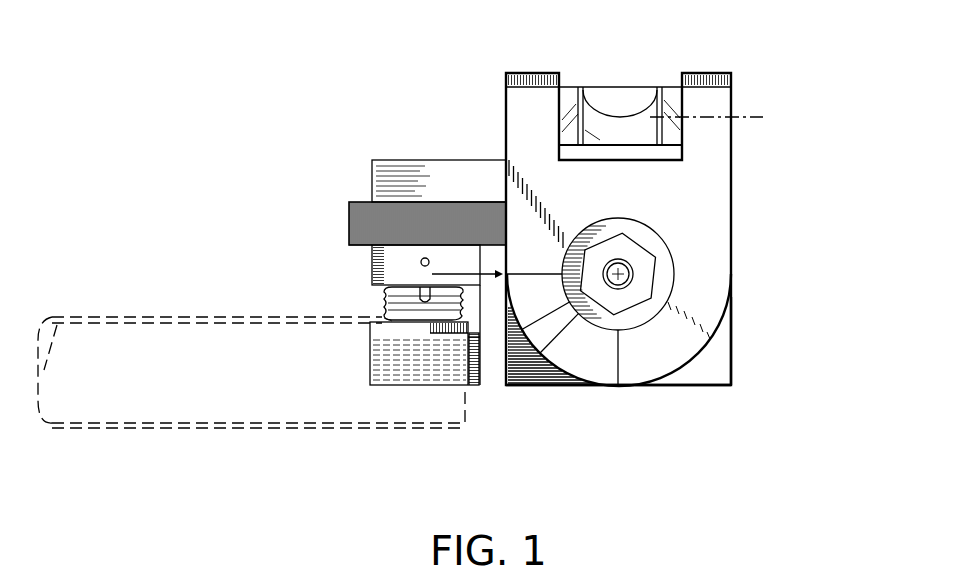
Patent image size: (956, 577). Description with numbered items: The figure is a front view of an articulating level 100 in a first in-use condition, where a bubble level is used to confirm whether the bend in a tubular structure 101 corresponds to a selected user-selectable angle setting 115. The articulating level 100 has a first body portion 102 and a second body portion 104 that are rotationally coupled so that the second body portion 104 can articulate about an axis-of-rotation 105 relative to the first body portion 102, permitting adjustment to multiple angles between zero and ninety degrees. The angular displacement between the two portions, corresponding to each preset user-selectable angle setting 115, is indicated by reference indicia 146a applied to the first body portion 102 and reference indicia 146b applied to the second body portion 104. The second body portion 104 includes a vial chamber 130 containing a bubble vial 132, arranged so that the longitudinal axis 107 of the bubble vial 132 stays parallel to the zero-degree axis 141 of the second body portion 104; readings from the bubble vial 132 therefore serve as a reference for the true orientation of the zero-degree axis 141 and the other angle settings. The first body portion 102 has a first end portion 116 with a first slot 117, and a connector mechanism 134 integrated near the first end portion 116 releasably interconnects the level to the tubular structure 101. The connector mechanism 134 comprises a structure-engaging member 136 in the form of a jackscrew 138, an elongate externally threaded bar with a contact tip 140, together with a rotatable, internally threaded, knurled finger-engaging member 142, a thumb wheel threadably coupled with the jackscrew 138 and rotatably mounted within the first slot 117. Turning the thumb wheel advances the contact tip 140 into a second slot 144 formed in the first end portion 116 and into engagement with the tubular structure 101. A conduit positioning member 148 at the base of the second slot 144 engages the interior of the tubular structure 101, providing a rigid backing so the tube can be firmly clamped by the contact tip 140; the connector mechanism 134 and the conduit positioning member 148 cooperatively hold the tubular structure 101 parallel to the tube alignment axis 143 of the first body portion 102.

The articulating level 100 is at (215, 80).
The tubular structure 101 is at (148, 430).
The first body portion 102 is at (748, 347).
The second body portion 104 is at (740, 255).
The axis-of-rotation 105 is at (624, 269).
The longitudinal axis 107 is at (746, 114).
The user-selectable angle setting 115 is at (566, 400).
The first end portion 116 is at (372, 160).
The first slot 117 is at (378, 202).
The vial chamber 130 is at (540, 270).
The bubble vial 132 is at (655, 100).
The connector mechanism 134 is at (338, 270).
The structure-engaging member 136 is at (365, 300).
The jackscrew 138 is at (407, 330).
The contact tip 140 is at (390, 337).
The zero-degree axis 141 is at (503, 113).
The finger-engaging member 142 is at (349, 216).
The tube alignment axis 143 is at (480, 277).
The second slot 144 is at (383, 313).
The reference indicia 146a is at (455, 255).
The reference indicia 146b is at (620, 356).
The conduit positioning member 148 is at (428, 328).